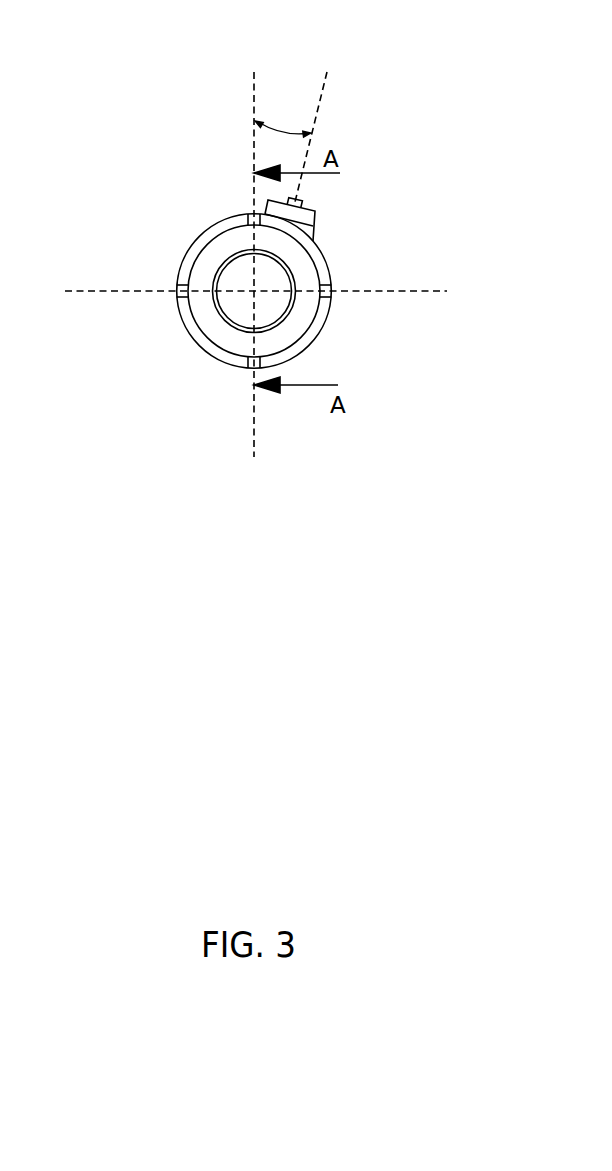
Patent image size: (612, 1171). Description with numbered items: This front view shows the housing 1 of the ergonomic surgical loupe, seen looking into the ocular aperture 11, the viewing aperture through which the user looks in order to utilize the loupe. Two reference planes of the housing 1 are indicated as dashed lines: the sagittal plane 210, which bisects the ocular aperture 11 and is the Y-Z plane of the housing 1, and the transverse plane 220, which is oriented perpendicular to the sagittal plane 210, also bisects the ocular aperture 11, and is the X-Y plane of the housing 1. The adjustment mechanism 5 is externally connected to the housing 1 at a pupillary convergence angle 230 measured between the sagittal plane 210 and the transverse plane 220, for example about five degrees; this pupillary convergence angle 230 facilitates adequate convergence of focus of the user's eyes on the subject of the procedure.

The housing 1 is at (190, 224).
The adjustment mechanism 5 is at (335, 226).
The ocular aperture 11 is at (237, 273).
The sagittal plane 210 is at (254, 107).
The transverse plane 220 is at (82, 290).
The pupillary convergence angle 230 is at (307, 132).